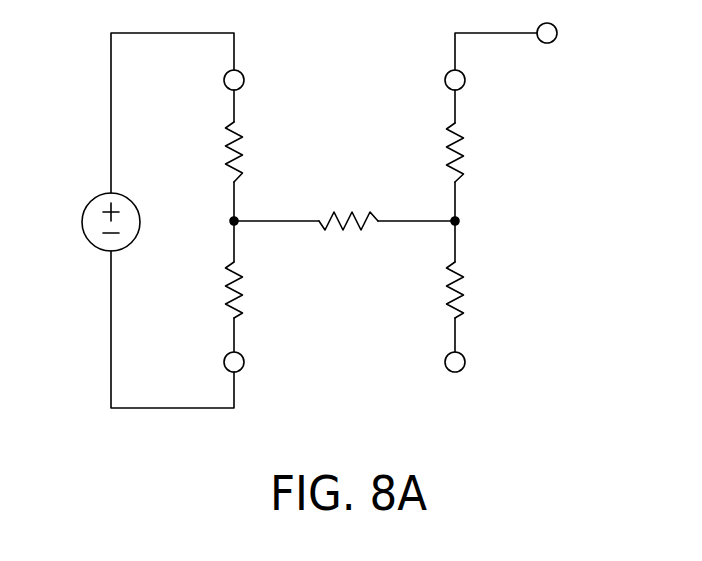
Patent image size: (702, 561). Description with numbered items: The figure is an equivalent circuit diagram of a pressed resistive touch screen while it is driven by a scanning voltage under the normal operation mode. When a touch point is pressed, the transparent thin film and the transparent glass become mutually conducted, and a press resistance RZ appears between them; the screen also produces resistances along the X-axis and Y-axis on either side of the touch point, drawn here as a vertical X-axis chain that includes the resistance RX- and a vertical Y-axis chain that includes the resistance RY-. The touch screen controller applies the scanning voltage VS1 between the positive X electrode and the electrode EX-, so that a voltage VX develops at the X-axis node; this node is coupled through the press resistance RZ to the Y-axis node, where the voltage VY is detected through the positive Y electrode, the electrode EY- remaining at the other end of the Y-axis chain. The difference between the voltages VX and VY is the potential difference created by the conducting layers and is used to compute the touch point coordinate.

The scanning voltage VS1 is at (91, 222).
The voltage VX is at (215, 222).
The resistance RX- is at (258, 290).
The electrode EX- is at (245, 362).
The press resistance RZ is at (348, 200).
The voltage VY is at (476, 221).
The resistance RY- is at (478, 290).
The electrode EY- is at (466, 362).